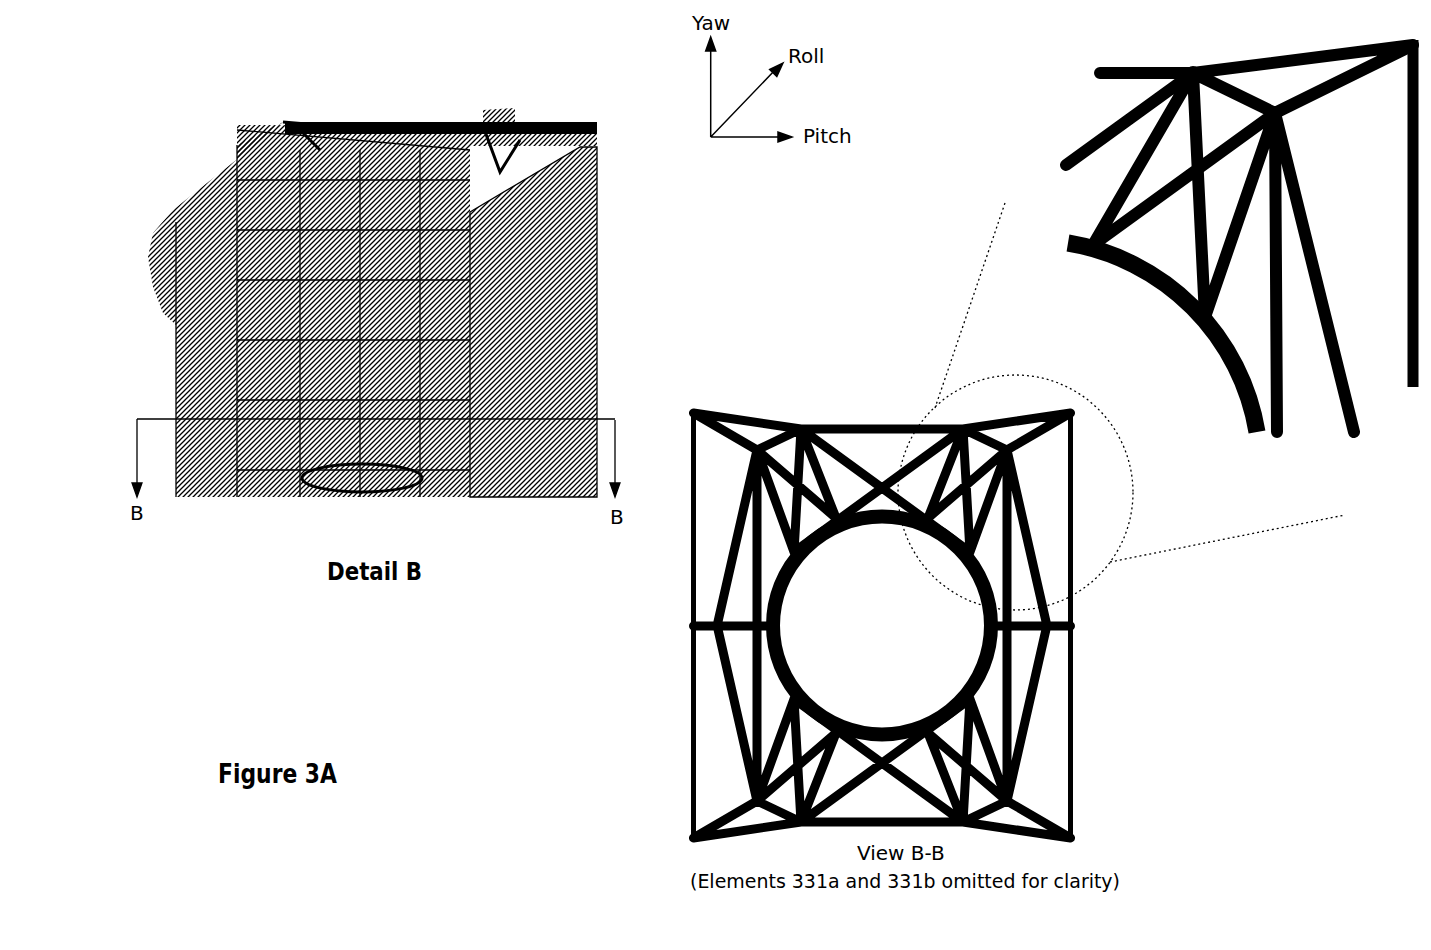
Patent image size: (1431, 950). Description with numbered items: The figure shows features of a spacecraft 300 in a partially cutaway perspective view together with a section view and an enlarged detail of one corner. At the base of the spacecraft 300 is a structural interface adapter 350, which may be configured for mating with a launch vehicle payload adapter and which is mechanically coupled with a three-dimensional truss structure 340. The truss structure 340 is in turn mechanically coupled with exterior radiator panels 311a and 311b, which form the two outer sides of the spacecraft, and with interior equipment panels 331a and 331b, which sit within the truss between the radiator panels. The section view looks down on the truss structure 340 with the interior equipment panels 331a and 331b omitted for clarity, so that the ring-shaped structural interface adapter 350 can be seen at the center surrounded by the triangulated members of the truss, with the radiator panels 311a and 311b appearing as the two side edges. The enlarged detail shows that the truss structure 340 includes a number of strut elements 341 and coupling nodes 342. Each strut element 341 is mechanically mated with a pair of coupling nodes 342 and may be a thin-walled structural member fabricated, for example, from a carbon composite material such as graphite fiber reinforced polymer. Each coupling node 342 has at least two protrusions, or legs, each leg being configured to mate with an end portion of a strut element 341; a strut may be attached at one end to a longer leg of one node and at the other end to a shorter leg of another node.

The spacecraft 300 is at (232, 52).
The exterior radiator panel 311a is at (598, 338).
The exterior radiator panel 311b is at (172, 338).
The interior equipment panel 331a is at (500, 172).
The interior equipment panel 331b is at (320, 133).
The 3-D truss structure 340 is at (545, 100).
The strut element 341 is at (1160, 205).
The coupling node 342 is at (1288, 140).
The structural interface adapter 350 is at (810, 548).